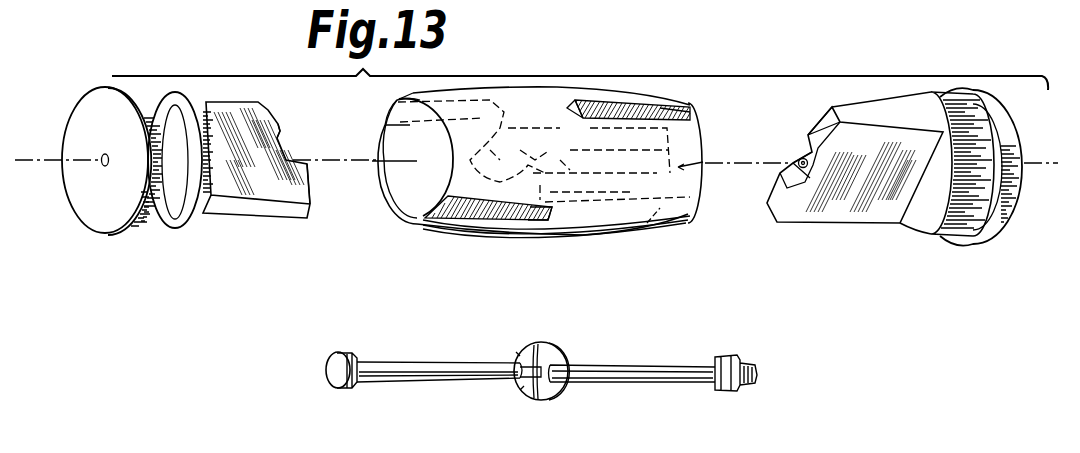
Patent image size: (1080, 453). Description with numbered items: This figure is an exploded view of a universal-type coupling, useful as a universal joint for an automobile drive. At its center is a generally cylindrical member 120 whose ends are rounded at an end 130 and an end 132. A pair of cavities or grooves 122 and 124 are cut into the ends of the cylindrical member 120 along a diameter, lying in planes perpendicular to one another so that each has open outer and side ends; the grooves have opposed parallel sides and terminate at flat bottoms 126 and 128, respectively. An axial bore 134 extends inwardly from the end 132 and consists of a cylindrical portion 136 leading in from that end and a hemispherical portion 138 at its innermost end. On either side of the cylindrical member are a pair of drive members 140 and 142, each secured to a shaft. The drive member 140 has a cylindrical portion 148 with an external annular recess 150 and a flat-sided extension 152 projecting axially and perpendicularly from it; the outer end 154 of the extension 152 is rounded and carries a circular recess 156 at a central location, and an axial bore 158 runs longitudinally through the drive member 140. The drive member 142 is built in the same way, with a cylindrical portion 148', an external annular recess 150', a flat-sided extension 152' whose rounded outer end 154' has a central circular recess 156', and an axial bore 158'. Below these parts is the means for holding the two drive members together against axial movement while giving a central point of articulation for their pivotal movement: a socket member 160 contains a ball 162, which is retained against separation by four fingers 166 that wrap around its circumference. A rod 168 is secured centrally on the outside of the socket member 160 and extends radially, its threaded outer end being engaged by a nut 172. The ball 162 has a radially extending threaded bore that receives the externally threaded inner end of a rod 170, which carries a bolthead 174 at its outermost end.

The cylindrical member 120 is at (527, 97).
The groove 122 is at (477, 223).
The groove 124 is at (643, 105).
The flat bottom 126 is at (533, 222).
The flat bottom 128 is at (583, 107).
The rounded end 130 is at (417, 103).
The rounded end 132 is at (670, 113).
The axial bore 134 is at (703, 162).
The cylindrical portion 136 is at (647, 223).
The hemispherical portion 138 is at (544, 157).
The drive member 140 is at (990, 232).
The drive member 142 is at (90, 108).
The cylindrical portion 148 is at (1009, 152).
The cylindrical portion 148' is at (199, 136).
The external annular recess 150 is at (966, 139).
The external annular recess 150' is at (157, 134).
The flat-sided extension 152 is at (855, 141).
The flat-sided extension 152' is at (256, 179).
The outer end 154 is at (841, 89).
The outer end 154' is at (338, 198).
The circular recess 156 is at (796, 126).
The circular recess 156' is at (313, 126).
The axial bore 158 is at (763, 188).
The axial bore 158' is at (110, 179).
The socket member 160 is at (561, 348).
The ball 162 is at (536, 357).
The fingers 166 is at (530, 378).
The rod 168 is at (648, 370).
The rod 170 is at (426, 368).
The nut 172 is at (732, 363).
The bolthead 174 is at (340, 362).